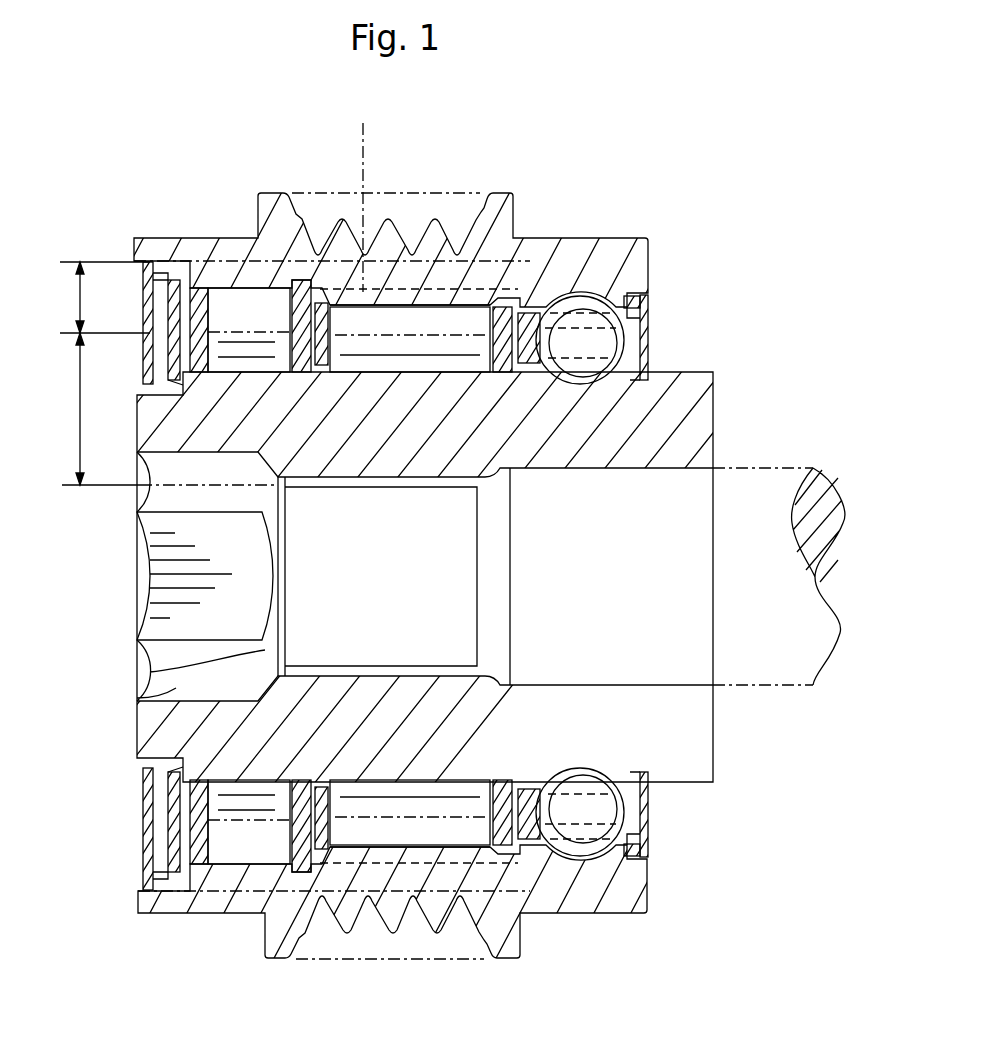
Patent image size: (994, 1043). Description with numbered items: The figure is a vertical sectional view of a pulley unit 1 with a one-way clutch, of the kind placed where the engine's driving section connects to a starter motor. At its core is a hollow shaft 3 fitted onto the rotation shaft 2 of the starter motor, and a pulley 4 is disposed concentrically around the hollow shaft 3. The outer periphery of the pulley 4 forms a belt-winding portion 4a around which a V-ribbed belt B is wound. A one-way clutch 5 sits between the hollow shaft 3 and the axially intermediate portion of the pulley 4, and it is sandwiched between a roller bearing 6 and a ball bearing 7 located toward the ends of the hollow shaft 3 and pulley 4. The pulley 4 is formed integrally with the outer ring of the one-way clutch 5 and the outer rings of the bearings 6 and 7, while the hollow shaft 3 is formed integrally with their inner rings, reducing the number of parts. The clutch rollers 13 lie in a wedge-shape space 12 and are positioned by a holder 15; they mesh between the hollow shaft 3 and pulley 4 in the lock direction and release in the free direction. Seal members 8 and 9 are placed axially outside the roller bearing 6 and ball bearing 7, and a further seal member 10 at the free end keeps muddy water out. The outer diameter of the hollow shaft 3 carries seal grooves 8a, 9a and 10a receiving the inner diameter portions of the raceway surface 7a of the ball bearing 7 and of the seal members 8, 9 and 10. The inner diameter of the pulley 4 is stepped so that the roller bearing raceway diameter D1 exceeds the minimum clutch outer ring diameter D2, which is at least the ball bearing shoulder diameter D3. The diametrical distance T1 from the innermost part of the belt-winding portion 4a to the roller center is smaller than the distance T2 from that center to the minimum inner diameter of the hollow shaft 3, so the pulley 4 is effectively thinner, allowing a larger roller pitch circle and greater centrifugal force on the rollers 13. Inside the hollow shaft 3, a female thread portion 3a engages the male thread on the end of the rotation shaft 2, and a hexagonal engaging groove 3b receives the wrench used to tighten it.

The pulley unit 1 is at (497, 525).
The rotation shaft 2 is at (792, 470).
The hollow shaft 3 is at (710, 370).
The female thread portion 3a is at (148, 657).
The hexagonal engaging groove 3b is at (152, 700).
The pulley 4 is at (650, 260).
The belt-winding portion 4a is at (318, 300).
The one-way clutch 5 is at (408, 300).
The roller bearing 6 is at (225, 308).
The ball bearing 7 is at (606, 296).
The raceway surface 7a is at (585, 775).
The seal member 8 is at (170, 323).
The seal groove 8a is at (150, 790).
The seal member 9 is at (648, 333).
The seal groove 9a is at (652, 784).
The seal member 10 is at (150, 806).
The seal groove 10a is at (148, 765).
The wedge-shape space 12 is at (358, 190).
The rollers 13 is at (460, 305).
The holder 15 is at (320, 287).
The V-ribbed belt B is at (395, 195).
The inner diameter of raceway of outer ring of roller bearing D1 is at (255, 298).
The minimum inner diameter of outer ring of one-way clutch D2 is at (517, 290).
The inner diameter of raceway shoulder portion of outer ring of ball bearing D3 is at (545, 315).
The diametrical distance T1 is at (96, 297).
The diametrical distance T2 is at (160, 409).